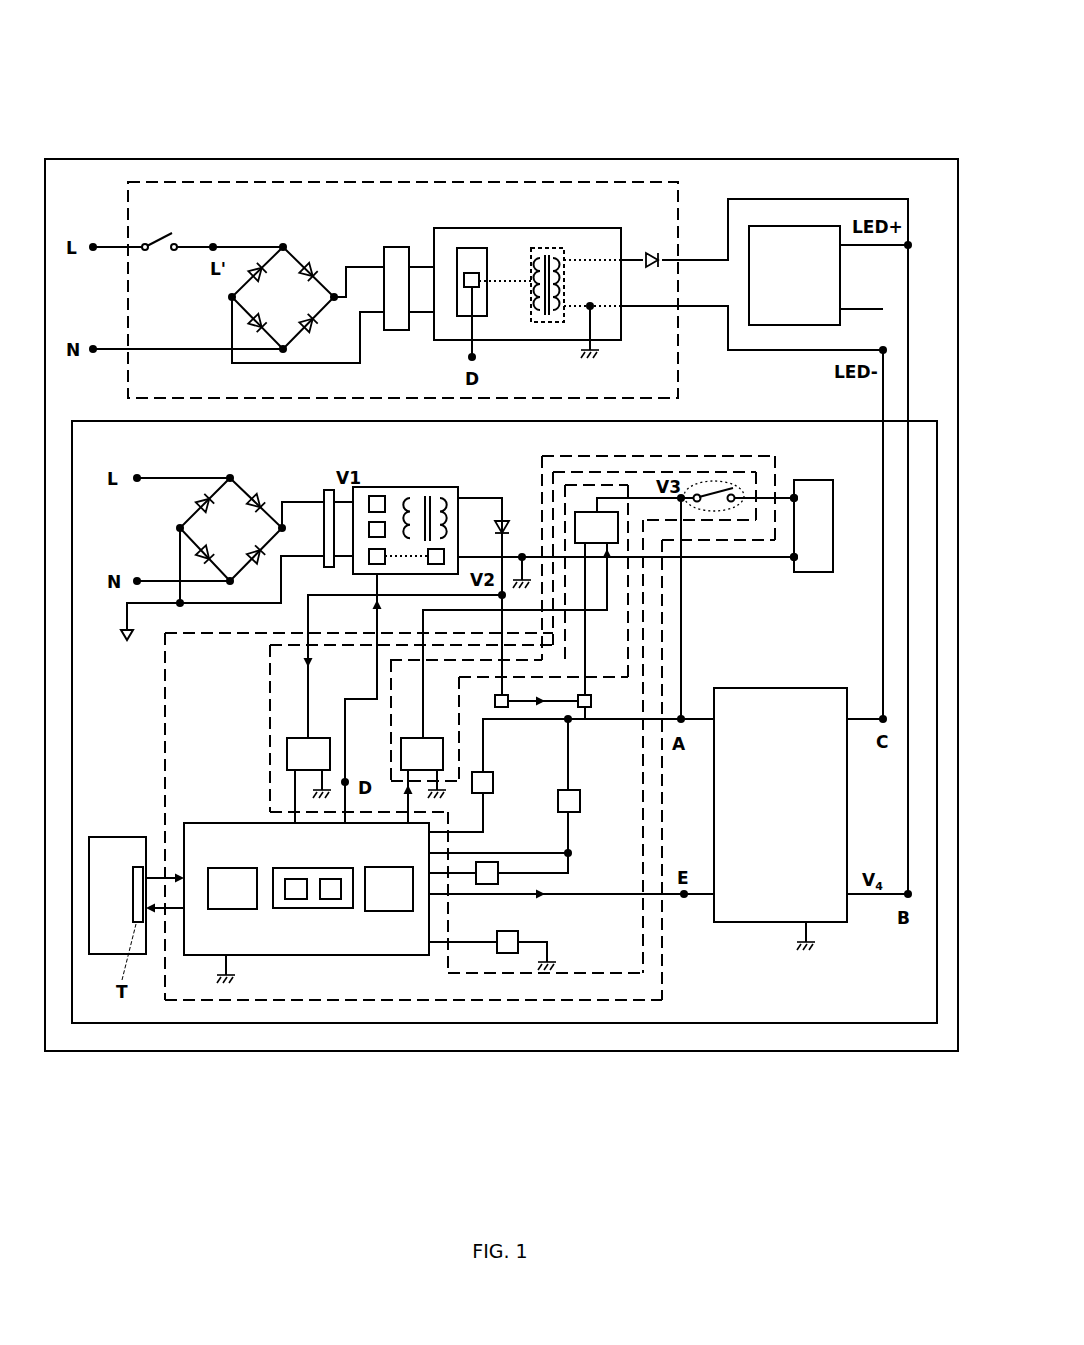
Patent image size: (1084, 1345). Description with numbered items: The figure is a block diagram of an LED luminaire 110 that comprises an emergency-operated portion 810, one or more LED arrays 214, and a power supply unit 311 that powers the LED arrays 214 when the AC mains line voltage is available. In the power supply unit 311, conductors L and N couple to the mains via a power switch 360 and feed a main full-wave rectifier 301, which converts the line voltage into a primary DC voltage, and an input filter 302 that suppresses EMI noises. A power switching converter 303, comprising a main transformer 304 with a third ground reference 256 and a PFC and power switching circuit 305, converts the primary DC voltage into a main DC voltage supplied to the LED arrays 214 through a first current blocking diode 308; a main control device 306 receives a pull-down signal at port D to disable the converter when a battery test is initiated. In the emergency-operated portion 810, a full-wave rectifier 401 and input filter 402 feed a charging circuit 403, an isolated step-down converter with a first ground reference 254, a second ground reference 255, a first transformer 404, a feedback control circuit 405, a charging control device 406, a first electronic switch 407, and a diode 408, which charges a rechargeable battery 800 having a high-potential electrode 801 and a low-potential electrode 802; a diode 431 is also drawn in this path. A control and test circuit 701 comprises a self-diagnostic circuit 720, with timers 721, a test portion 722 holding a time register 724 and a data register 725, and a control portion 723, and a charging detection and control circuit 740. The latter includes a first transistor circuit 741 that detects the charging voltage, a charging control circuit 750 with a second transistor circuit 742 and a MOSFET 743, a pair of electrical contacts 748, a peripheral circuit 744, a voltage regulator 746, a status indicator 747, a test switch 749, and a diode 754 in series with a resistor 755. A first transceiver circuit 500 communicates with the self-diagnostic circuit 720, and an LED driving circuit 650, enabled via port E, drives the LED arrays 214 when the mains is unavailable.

The LED luminaire 110 is at (402, 150).
The emergency-operated portion 810 is at (885, 1033).
The power supply unit 311 is at (499, 174).
The power switch 360 is at (155, 232).
The main full-wave rectifier 301 is at (266, 233).
The input filter 302 is at (395, 247).
The power switching converter 303 is at (624, 221).
The main transformer 304 is at (550, 240).
The PFC and power switching circuit 305 is at (450, 325).
The main control device 306 is at (475, 285).
The first current blocking diode 308 is at (655, 257).
The third ground reference 256 is at (593, 353).
The LED arrays 214 is at (795, 327).
The full-wave rectifier 401 is at (208, 465).
The input filter 402 is at (322, 492).
The charging circuit 403 is at (404, 536).
The first transformer 404 is at (443, 520).
The feedback control circuit 405 is at (438, 566).
The charging control device 406 is at (370, 538).
The first electronic switch 407 is at (368, 553).
The diode 408 is at (378, 493).
The diode 431 is at (507, 522).
The first ground reference 254 is at (124, 638).
The first transistor circuit 741 is at (320, 738).
The second transistor circuit 742 is at (397, 748).
The MOSFET 743 is at (620, 528).
The pair of electrical contacts 748 is at (735, 483).
The charging control circuit 750 is at (638, 609).
The rechargeable battery 800 is at (812, 573).
The high-potential electrode 801 is at (797, 497).
The low-potential electrode 802 is at (793, 560).
The diode 754 is at (506, 708).
The resistor 755 is at (586, 709).
The peripheral circuit 744 is at (494, 783).
The voltage regulator 746 is at (582, 813).
The status indicator 747 is at (487, 886).
The test switch 749 is at (511, 956).
The self-diagnostic circuit 720 is at (327, 991).
The timers 721 is at (250, 912).
The test portion 722 is at (318, 971).
The control portion 723 is at (410, 913).
The time register 724 is at (293, 877).
The data register 725 is at (333, 877).
The second ground reference 255 is at (221, 984).
The first transceiver circuit 500 is at (119, 825).
The LED driving circuit 650 is at (737, 933).
The charging detection and control circuit 740 is at (564, 991).
The control and test circuit 701 is at (650, 1011).